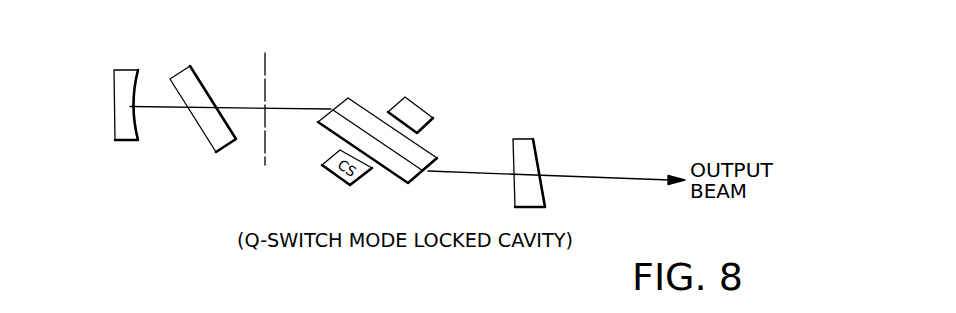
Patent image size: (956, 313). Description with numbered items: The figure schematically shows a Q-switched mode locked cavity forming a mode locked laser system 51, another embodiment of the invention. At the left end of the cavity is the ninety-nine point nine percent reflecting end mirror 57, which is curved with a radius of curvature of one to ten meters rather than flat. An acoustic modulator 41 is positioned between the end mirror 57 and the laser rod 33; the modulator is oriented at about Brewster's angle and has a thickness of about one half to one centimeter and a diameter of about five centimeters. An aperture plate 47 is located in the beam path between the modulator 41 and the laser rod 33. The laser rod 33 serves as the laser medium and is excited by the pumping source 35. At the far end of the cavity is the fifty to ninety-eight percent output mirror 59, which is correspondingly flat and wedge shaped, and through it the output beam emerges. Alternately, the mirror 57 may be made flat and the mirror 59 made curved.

The end mirror 57 is at (128, 68).
The acoustic modulator 41 is at (178, 68).
The aperture plate 47 is at (266, 80).
The laser rod 33 is at (359, 104).
The pumping source 35 is at (418, 105).
The output mirror 59 is at (538, 155).
The mode locked laser system 51 is at (116, 174).